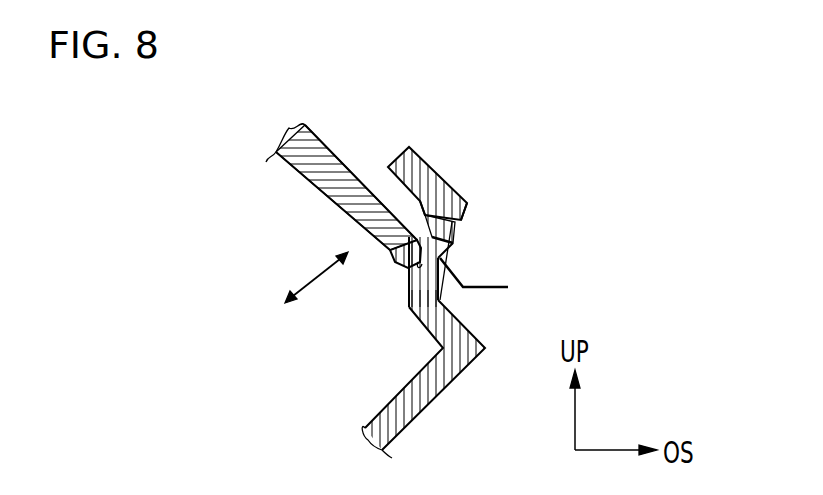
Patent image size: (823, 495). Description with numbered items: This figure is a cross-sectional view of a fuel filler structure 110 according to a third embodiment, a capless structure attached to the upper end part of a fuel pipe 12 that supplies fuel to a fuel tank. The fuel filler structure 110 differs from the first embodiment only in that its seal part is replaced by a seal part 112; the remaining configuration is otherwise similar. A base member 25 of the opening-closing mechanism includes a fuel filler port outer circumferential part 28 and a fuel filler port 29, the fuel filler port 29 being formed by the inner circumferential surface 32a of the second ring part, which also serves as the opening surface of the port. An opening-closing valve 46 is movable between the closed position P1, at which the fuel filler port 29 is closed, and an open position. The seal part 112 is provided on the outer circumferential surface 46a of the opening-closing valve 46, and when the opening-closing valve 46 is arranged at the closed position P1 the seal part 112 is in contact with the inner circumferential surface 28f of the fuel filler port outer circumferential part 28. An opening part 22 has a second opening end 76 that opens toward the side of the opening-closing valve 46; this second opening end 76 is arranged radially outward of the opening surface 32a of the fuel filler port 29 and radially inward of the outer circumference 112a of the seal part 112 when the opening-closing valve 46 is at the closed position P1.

The fuel filler structure 110 is at (323, 104).
The opening-closing valve 46 is at (342, 158).
The outer circumferential surface 46a is at (395, 258).
The fuel filler port 29 is at (393, 150).
The inner circumferential surface 32a is at (427, 183).
The second opening end 76 is at (418, 204).
The base member 25 is at (466, 211).
The opening part 22 is at (440, 240).
The closed position P1 is at (490, 281).
The fuel filler port outer circumferential part 28 is at (445, 285).
The inner circumferential surface 28f is at (409, 300).
The fuel pipe 12 is at (418, 420).
The seal part 112 is at (400, 262).
The outer circumference 112a is at (418, 262).